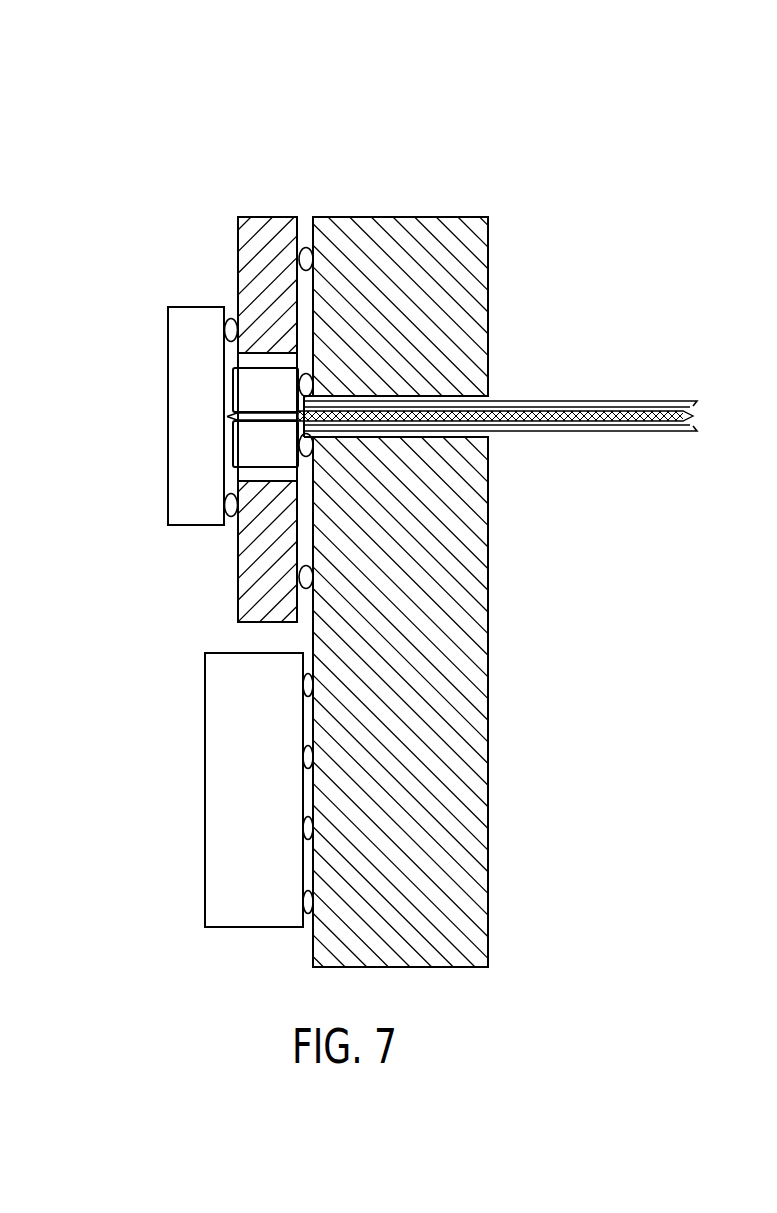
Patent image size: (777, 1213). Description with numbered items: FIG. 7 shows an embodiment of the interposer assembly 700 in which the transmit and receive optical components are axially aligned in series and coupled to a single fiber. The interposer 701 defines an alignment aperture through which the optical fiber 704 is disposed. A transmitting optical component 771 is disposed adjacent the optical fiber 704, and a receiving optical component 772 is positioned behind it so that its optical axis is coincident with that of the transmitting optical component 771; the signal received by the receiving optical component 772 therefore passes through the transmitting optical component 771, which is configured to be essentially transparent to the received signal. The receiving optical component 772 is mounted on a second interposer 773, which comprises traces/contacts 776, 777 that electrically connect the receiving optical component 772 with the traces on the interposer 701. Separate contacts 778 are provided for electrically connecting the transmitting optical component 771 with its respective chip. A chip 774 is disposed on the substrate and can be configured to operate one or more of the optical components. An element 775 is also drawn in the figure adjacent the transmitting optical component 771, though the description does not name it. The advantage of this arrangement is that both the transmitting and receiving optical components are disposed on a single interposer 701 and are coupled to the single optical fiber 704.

The sealing assembly 700 is at (113, 103).
The interposer 701 is at (370, 230).
The optical fiber 704 is at (568, 433).
The transmitting optical component 771 is at (243, 457).
The receiving optical component 772 is at (178, 433).
The second interposer 773 is at (262, 228).
The chip 774 is at (220, 857).
The upper seal block 775 is at (256, 362).
The traces/contacts 776 is at (232, 517).
The traces/contacts 777 is at (300, 586).
The contacts 778 is at (313, 450).